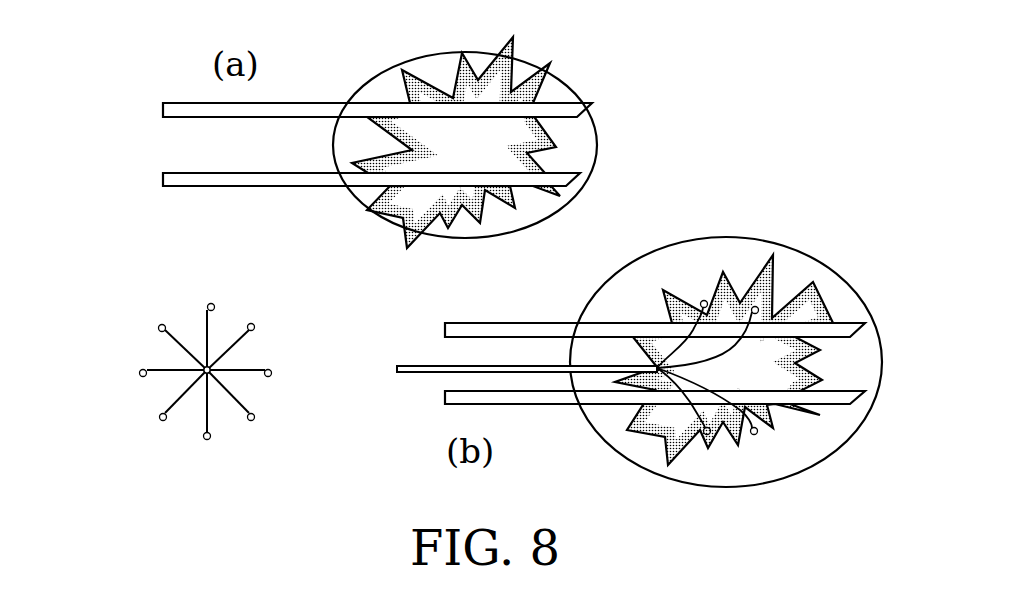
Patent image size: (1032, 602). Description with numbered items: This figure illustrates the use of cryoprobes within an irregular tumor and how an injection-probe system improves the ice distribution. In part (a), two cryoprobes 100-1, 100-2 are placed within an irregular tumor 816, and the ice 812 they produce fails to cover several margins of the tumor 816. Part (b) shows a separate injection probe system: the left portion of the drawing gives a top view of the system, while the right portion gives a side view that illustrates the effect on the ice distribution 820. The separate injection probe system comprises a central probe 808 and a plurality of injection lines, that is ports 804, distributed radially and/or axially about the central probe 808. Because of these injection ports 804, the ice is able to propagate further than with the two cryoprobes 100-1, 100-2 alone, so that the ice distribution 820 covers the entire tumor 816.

The cryoprobe 100-1 is at (160, 107).
The cryoprobe 100-2 is at (160, 178).
The ice 812 is at (574, 141).
The irregular tumor 816 is at (658, 290).
The ice distribution 820 is at (728, 263).
The injection lines (ports) 804 is at (661, 355).
The central probe 808 is at (216, 373).